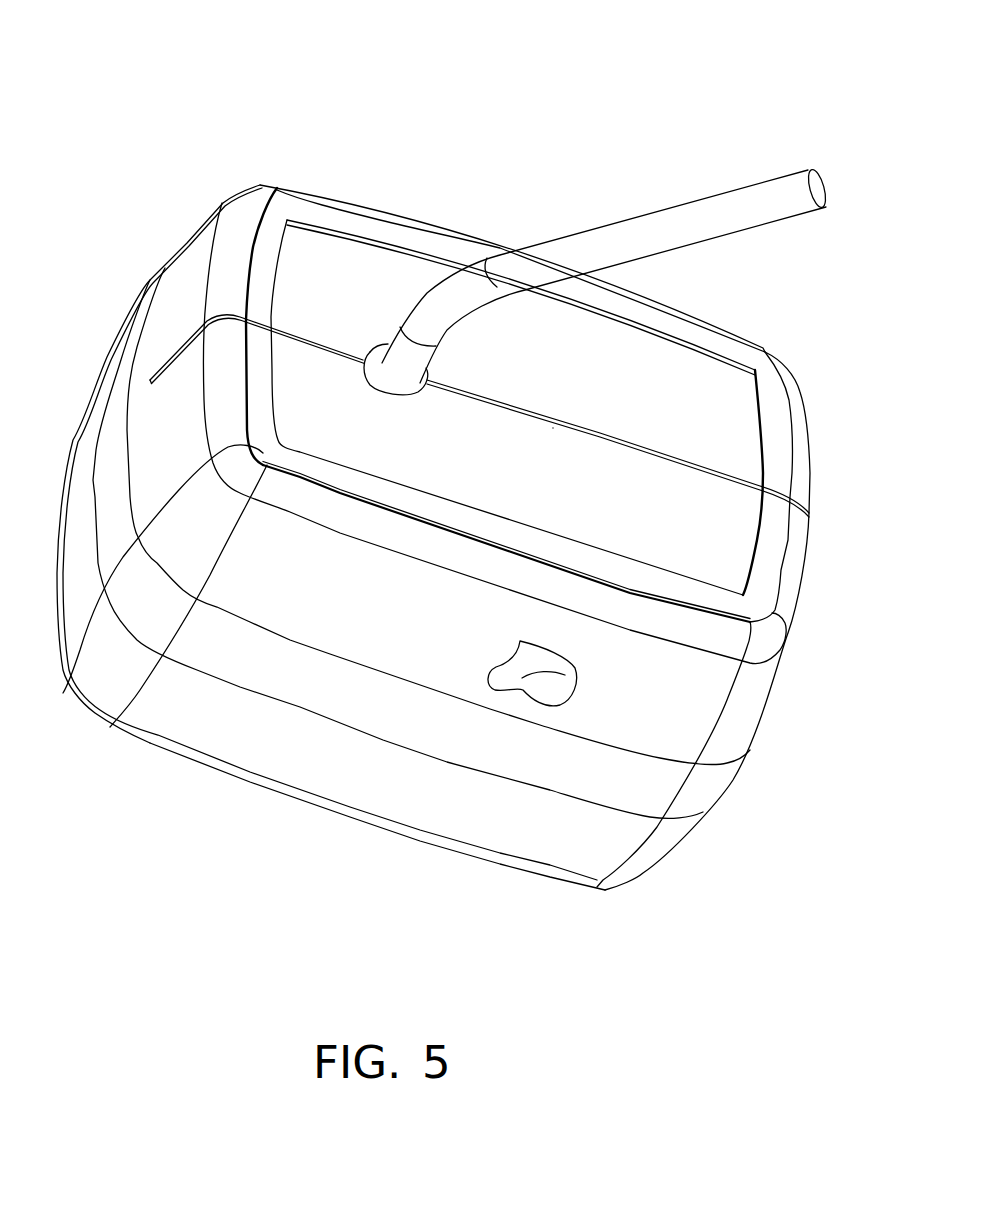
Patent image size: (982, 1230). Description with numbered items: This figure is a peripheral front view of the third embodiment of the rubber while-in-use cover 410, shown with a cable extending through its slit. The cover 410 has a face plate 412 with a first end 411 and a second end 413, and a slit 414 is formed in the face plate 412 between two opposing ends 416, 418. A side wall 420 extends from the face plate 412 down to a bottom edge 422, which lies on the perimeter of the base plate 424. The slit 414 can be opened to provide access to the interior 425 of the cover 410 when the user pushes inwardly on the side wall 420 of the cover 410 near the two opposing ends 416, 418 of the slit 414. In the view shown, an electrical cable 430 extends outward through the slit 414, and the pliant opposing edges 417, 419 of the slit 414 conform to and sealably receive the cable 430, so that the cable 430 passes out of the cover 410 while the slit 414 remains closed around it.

The cover 410 is at (500, 107).
The first end 411 is at (308, 258).
The face plate 412 is at (690, 397).
The second end 413 is at (708, 552).
The slit 414 is at (553, 428).
The first opposing end of slit 416 is at (181, 348).
The first pliant opposing edge of slit 417 is at (446, 348).
The second opposing end of slit 418 is at (809, 515).
The second pliant opposing edge of slit 419 is at (384, 378).
The side wall 420 is at (640, 703).
The bottom edge 422 is at (420, 840).
The base plate 424 is at (145, 743).
The interior 425 is at (520, 670).
The electrical cable 430 is at (735, 187).